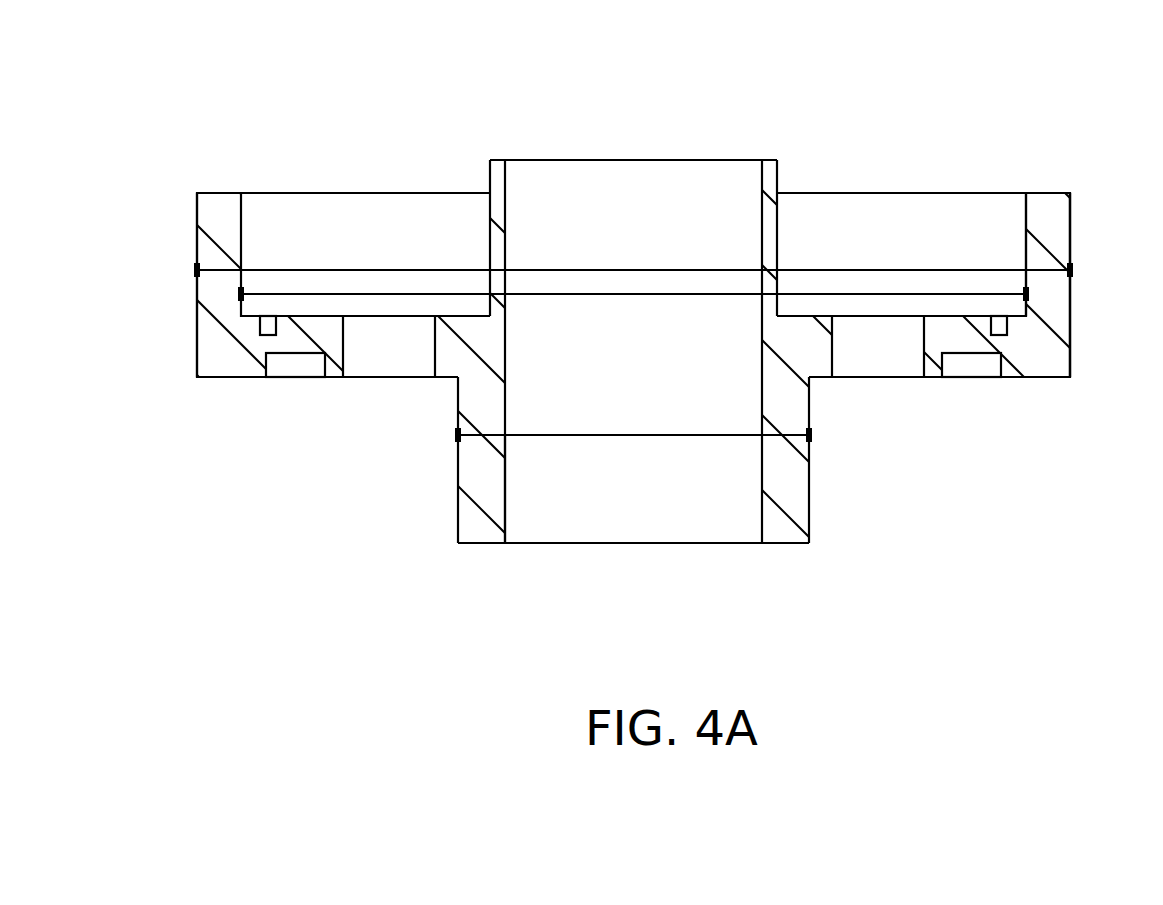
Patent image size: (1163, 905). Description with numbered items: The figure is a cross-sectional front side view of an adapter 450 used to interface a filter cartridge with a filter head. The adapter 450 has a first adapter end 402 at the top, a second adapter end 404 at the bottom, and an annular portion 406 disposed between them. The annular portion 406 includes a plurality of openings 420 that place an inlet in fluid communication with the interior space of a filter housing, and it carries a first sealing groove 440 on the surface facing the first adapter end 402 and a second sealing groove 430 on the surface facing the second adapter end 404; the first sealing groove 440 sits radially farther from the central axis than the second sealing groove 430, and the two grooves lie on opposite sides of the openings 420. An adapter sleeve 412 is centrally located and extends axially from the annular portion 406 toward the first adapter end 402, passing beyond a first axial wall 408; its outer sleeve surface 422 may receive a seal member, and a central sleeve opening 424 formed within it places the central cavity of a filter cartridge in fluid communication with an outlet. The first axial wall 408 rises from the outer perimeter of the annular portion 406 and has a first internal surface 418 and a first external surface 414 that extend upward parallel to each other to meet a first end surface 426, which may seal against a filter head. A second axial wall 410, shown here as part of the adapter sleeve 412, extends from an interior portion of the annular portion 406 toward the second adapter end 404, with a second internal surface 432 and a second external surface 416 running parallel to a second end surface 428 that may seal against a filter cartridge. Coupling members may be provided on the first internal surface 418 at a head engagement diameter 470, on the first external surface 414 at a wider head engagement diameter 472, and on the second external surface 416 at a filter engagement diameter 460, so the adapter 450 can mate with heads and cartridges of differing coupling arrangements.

The adapter 450 is at (100, 66).
The first adapter end 402 is at (497, 150).
The second adapter end 404 is at (468, 556).
The annular portion 406 is at (946, 325).
The first axial wall 408 is at (190, 185).
The second axial wall 410 is at (820, 470).
The adapter sleeve 412 is at (778, 170).
The first external surface 414 is at (197, 340).
The second external surface 416 is at (458, 498).
The first internal surface 418 is at (241, 205).
The openings 420 is at (388, 360).
The outer sleeve surface 422 is at (778, 218).
The central sleeve opening 424 is at (621, 500).
The first end surface 426 is at (1045, 193).
The second end surface 428 is at (790, 545).
The second sealing groove 430 is at (300, 378).
The second internal surface 432 is at (507, 495).
The first sealing groove 440 is at (268, 325).
The filter engagement diameter 460 is at (633, 434).
The head engagement diameter 470 is at (637, 296).
The head engagement diameter 472 is at (665, 268).